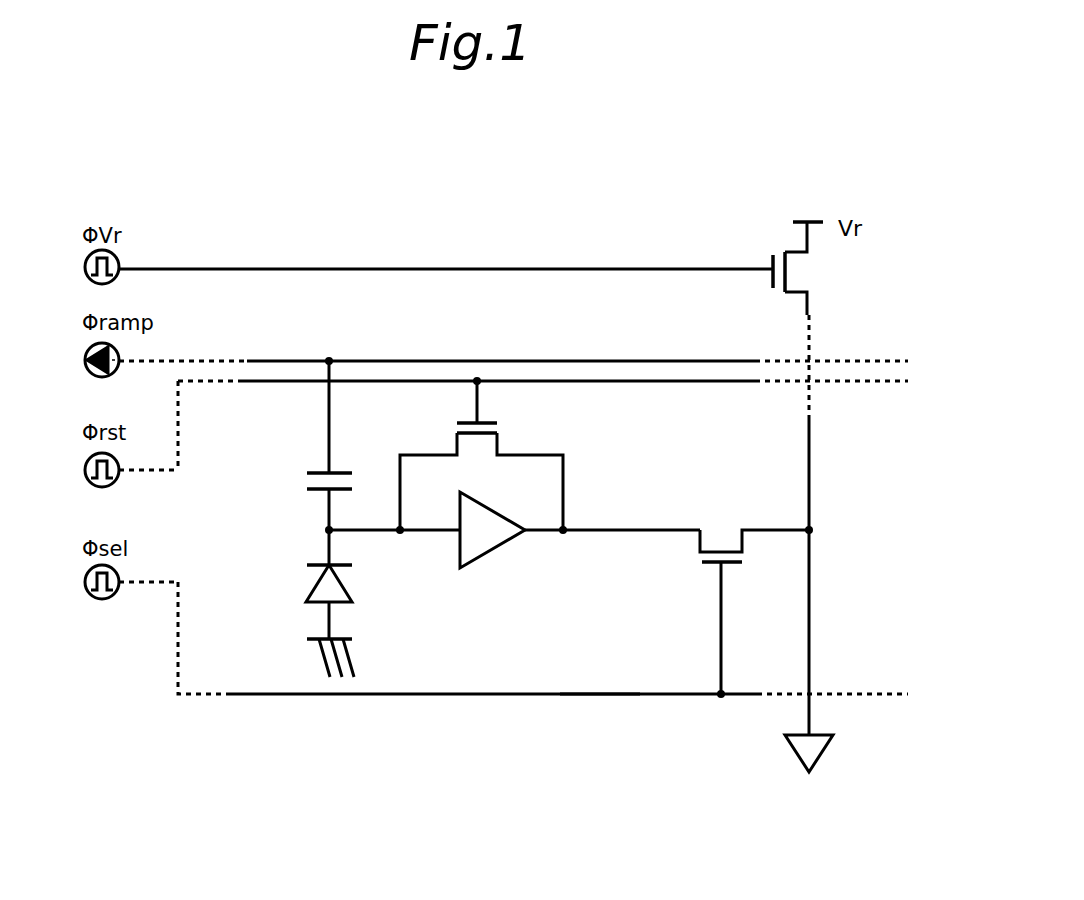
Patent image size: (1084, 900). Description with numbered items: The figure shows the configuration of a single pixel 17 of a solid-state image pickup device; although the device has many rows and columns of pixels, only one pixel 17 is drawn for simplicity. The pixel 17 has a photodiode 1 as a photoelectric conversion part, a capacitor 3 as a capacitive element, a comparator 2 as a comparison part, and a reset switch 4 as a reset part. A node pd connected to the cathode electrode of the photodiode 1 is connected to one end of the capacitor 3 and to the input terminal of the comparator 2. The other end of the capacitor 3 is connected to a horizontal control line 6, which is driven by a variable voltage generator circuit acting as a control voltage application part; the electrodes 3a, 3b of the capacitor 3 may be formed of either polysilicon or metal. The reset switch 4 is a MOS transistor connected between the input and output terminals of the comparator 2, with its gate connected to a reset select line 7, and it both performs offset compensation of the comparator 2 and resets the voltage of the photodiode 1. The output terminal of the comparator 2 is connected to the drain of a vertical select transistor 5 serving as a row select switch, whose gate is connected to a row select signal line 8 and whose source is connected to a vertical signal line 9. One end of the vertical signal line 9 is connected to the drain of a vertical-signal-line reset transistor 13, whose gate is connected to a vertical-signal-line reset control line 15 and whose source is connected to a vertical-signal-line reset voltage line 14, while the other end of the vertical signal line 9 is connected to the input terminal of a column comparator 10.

The photodiode 1 is at (351, 577).
The comparator 2 is at (498, 552).
The capacitor 3 is at (321, 443).
The electrode of capacitor 3a is at (343, 472).
The second electrode of capacitor 3b is at (343, 492).
The reset switch 4 is at (505, 428).
The vertical select transistor 5 is at (697, 560).
The horizontal control line 6 is at (297, 360).
The reset select line 7 is at (397, 381).
The row select signal line 8 is at (383, 696).
The vertical signal line 9 is at (812, 474).
The column comparator 10 is at (823, 755).
The vertical-signal-line reset transistor 13 is at (793, 252).
The vertical-signal-line reset voltage line 14 is at (810, 242).
The vertical-signal-line reset control line 15 is at (317, 268).
The pixel 17 is at (595, 704).